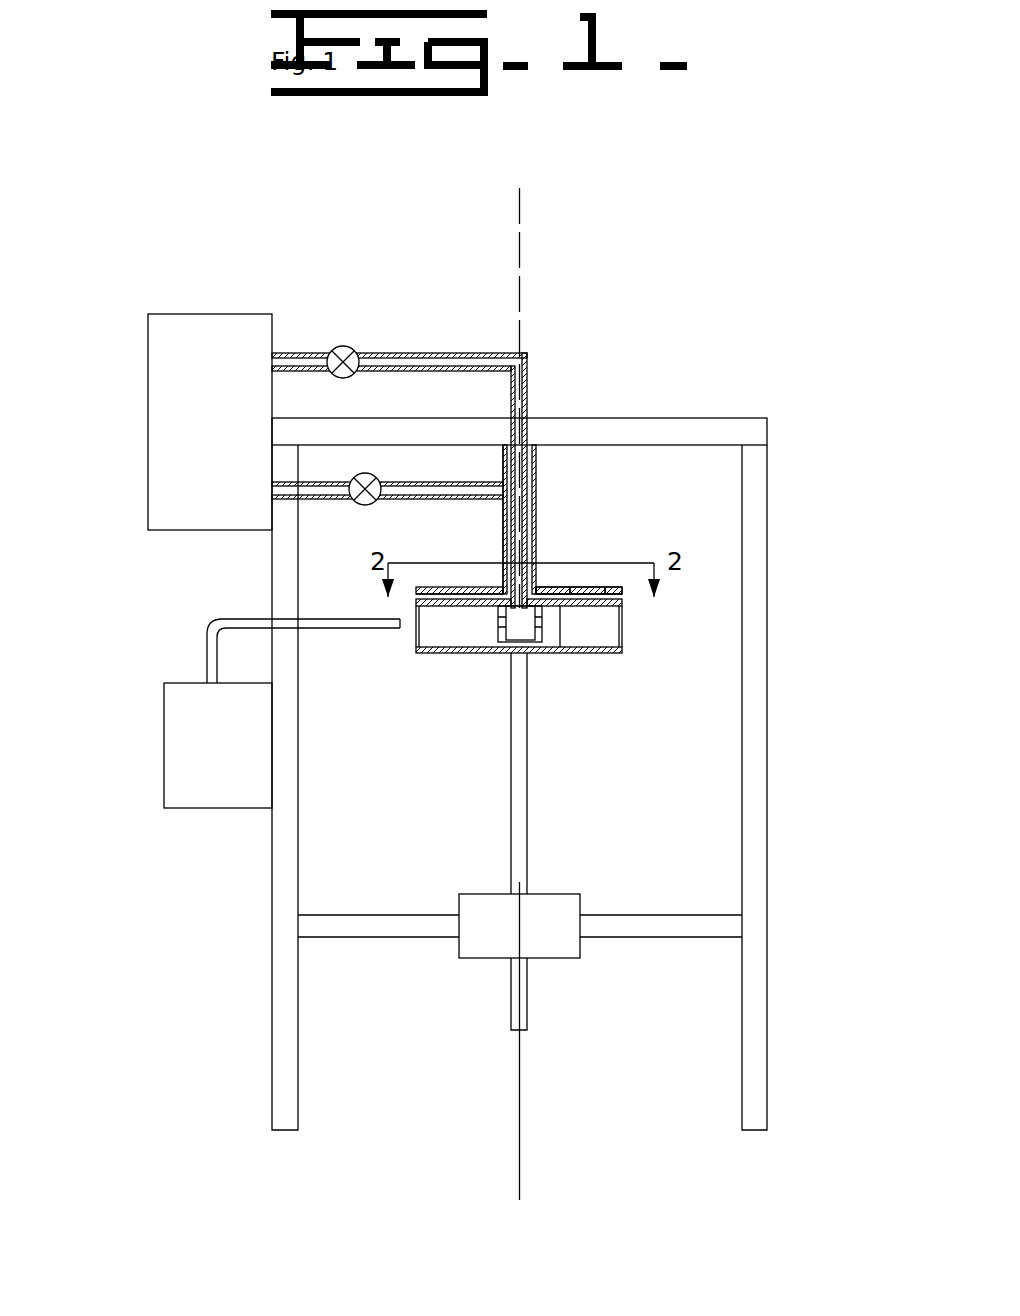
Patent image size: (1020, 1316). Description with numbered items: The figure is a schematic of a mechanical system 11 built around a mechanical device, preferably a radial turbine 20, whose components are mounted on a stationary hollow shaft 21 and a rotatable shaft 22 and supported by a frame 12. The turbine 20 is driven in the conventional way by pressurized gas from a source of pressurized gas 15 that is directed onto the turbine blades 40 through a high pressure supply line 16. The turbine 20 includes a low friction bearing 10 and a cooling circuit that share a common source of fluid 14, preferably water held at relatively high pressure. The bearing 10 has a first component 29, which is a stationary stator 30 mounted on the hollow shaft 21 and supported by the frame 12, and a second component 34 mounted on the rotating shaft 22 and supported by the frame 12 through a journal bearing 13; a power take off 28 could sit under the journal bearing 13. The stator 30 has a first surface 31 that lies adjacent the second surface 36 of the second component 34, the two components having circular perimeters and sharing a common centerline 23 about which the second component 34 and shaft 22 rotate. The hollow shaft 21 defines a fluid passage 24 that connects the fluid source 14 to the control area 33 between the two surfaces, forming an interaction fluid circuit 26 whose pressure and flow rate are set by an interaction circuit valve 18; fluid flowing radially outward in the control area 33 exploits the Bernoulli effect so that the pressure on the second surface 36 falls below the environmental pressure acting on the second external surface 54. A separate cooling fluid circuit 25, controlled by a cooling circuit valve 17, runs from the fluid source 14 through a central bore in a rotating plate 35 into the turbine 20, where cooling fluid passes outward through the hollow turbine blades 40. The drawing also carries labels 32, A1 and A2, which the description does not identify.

The low friction bearing 10 is at (688, 581).
The mechanical system 11 is at (738, 280).
The frame 12 is at (767, 462).
The journal bearing 13 is at (580, 948).
The source of fluid 14 is at (208, 314).
The source of pressurized gas 15 is at (164, 760).
The high pressure supply line 16 is at (333, 628).
The cooling circuit valve 17 is at (333, 347).
The interaction circuit valve 18 is at (365, 474).
The turbine 20 is at (625, 680).
The stationary hollow shaft 21 is at (537, 445).
The rotatable shaft 22 is at (527, 832).
The centerline 23 is at (520, 222).
The fluid passage 24 is at (528, 487).
The cooling fluid circuit 25 is at (468, 353).
The interaction fluid circuit 26 is at (333, 498).
The power take off 28 is at (512, 1028).
The first component 29 is at (416, 592).
The stator 30 is at (622, 590).
The first surface 31 is at (592, 587).
The upper plate inner region 32 is at (548, 587).
The control area 33 is at (413, 603).
The second component 34 is at (622, 603).
The rotating plate 35 is at (418, 600).
The second surface 36 is at (615, 587).
The turbine blades 40 is at (567, 632).
The second external surface 54 is at (612, 606).
The first area A1 is at (503, 522).
The second area A2 is at (583, 608).